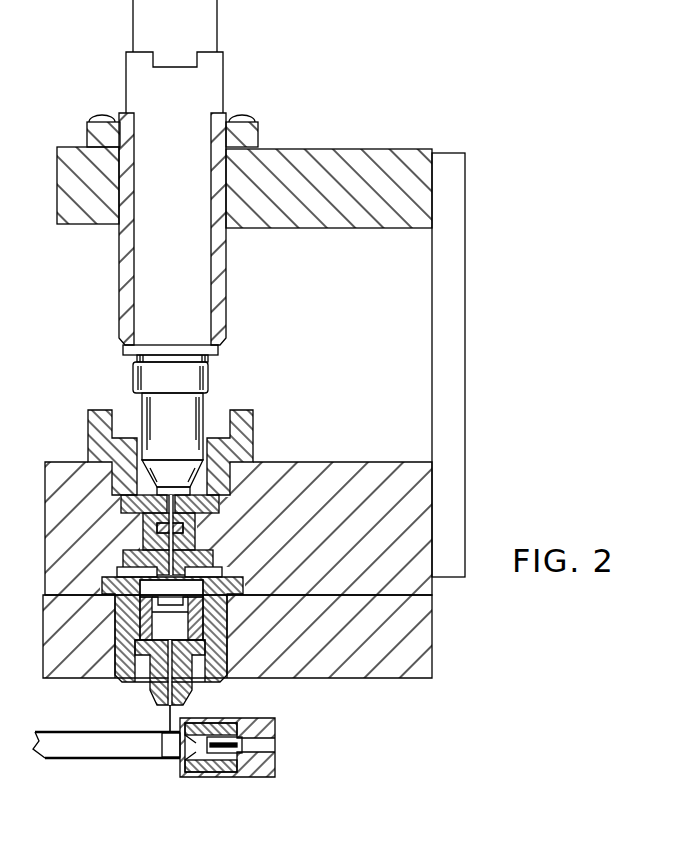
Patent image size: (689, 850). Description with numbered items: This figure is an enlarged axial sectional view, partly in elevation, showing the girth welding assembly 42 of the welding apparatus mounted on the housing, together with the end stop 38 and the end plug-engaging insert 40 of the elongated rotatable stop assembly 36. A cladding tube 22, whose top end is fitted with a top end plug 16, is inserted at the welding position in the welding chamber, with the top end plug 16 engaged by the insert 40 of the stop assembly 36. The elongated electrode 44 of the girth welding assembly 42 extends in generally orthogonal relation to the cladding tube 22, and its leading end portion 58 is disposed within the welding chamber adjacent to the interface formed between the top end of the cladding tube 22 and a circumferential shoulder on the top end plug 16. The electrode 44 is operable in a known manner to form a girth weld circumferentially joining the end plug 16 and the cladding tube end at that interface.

The girth welding assembly 42 is at (259, 387).
The elongated electrode 44 is at (182, 547).
The leading end portion 58 is at (177, 716).
The cladding tube 22 is at (117, 762).
The top end plug 16 is at (176, 748).
The end plug-engaging insert 40 is at (201, 776).
The end stop 38 is at (245, 780).
The stop assembly 36 is at (246, 773).